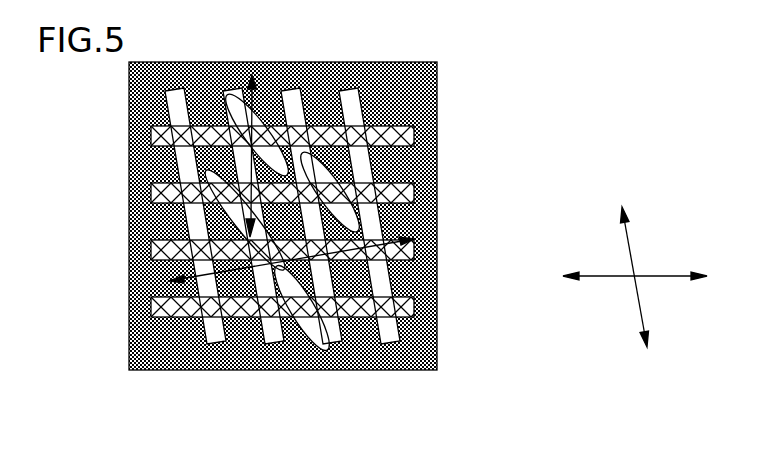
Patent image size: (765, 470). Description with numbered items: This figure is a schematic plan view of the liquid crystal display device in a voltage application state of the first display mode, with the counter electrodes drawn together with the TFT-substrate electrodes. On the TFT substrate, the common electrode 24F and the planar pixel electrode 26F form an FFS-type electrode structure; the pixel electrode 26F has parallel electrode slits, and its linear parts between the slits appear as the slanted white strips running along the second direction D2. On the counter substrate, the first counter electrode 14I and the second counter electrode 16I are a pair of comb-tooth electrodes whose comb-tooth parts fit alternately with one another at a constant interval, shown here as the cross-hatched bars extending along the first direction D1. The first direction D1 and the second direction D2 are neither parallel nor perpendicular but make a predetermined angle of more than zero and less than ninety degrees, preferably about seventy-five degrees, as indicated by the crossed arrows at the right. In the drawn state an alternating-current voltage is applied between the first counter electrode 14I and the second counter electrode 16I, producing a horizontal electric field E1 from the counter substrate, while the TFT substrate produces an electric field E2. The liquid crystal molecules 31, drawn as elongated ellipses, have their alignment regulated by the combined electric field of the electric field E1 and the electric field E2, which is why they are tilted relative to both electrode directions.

The common electrode 24F is at (140, 93).
The pixel electrode 26F is at (281, 221).
The electric field E1 is at (245, 172).
The electric field E2 is at (352, 187).
The liquid crystal molecules 31 is at (238, 219).
The first counter electrode 14I is at (414, 193).
The second counter electrode 16I is at (414, 252).
The first direction D1 is at (665, 276).
The second direction D2 is at (640, 303).